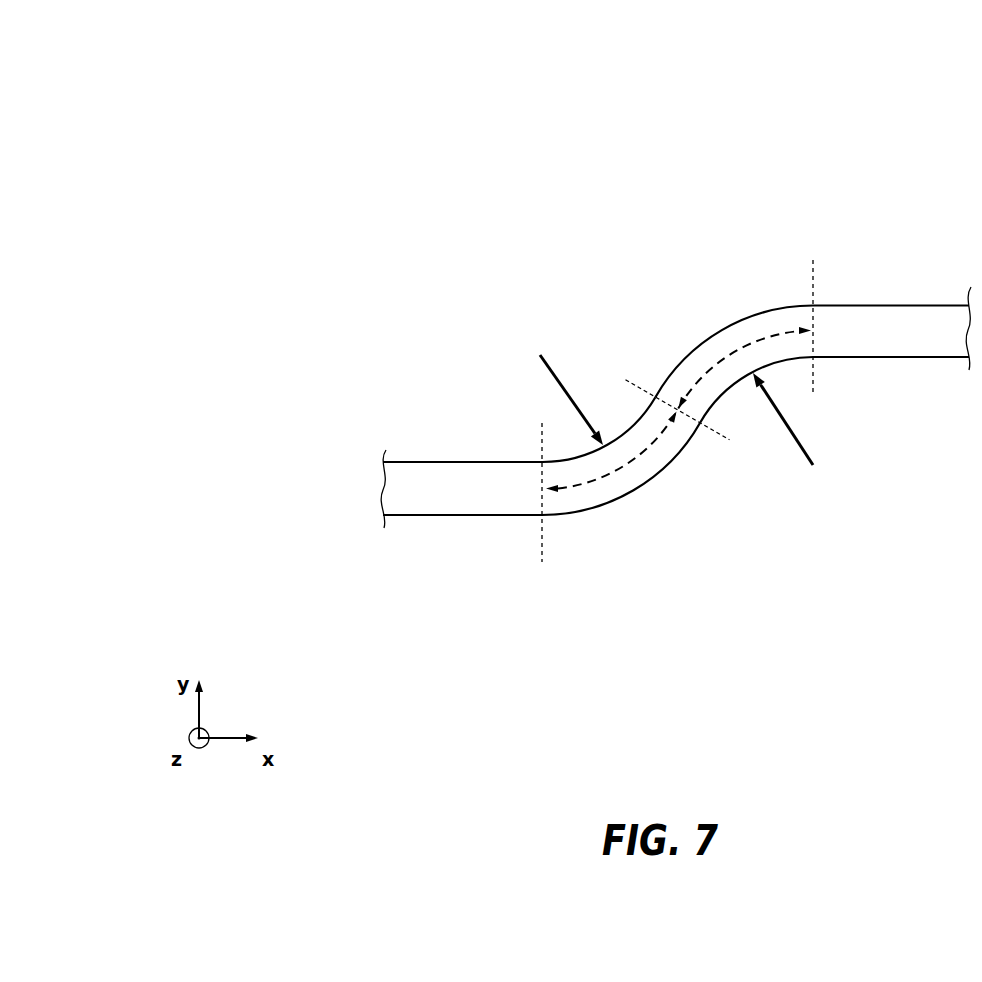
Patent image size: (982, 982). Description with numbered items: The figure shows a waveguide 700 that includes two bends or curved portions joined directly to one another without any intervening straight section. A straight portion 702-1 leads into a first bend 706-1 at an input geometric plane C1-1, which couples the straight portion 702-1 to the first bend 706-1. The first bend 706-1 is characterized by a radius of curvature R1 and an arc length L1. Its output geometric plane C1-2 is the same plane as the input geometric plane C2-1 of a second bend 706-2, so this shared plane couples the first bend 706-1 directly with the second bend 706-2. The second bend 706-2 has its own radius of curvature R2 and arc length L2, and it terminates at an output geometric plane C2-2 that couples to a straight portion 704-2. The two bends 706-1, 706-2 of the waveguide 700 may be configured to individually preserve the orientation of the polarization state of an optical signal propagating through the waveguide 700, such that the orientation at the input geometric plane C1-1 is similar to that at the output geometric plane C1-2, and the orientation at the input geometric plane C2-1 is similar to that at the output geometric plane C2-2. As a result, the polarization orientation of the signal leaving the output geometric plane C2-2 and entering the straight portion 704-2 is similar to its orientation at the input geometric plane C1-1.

The waveguide 700 is at (344, 73).
The straight portion 702-1 is at (435, 493).
The straight portion 704-2 is at (920, 327).
The first bend 706-1 is at (671, 539).
The second bend 706-2 is at (709, 310).
The input geometric plane C1-1 is at (542, 543).
The output geometric plane C1-2 is at (727, 443).
The input geometric plane C2-1 is at (637, 384).
The output geometric plane C2-2 is at (813, 278).
The arc length L1 is at (642, 458).
The arc length L2 is at (714, 362).
The radius of curvature R1 is at (552, 372).
The radius of curvature R2 is at (800, 442).